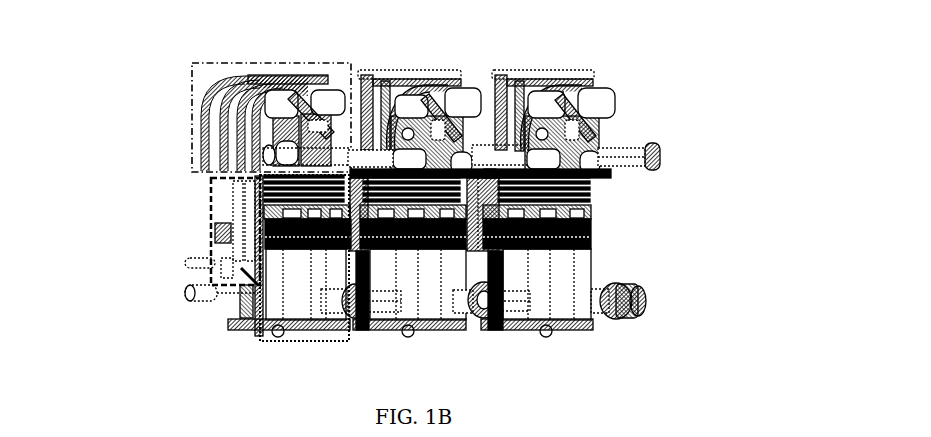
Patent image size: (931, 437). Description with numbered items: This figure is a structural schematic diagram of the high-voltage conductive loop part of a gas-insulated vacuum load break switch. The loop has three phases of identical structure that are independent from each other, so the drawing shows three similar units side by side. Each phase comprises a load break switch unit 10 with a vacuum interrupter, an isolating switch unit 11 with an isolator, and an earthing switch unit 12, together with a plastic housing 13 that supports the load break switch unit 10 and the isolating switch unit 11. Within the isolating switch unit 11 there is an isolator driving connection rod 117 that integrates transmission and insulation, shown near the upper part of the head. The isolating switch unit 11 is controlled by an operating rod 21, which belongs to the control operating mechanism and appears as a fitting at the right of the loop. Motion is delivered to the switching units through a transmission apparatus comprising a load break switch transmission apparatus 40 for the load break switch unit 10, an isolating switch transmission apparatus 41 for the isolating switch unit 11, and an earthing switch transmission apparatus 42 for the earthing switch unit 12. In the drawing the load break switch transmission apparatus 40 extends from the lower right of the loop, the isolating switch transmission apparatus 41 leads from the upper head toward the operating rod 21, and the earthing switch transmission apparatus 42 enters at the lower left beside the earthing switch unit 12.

The load break switch unit 10 is at (307, 333).
The isolating switch unit 11 is at (184, 112).
The earthing switch unit 12 is at (206, 223).
The plastic housing 13 is at (560, 258).
The operating rod 21 is at (614, 152).
The load break switch transmission apparatus 40 is at (625, 290).
The isolating switch transmission apparatus 41 is at (592, 145).
The earthing switch transmission apparatus 42 is at (207, 288).
The isolator driving connection rod 117 is at (584, 96).